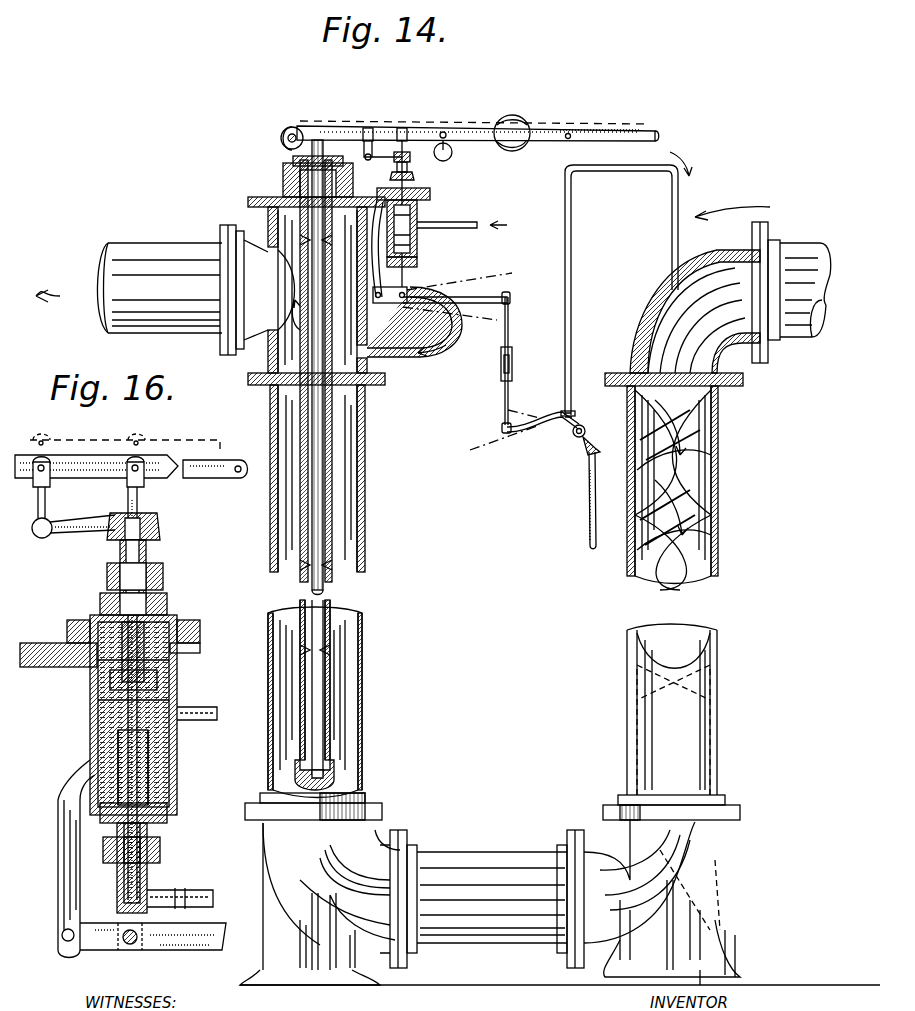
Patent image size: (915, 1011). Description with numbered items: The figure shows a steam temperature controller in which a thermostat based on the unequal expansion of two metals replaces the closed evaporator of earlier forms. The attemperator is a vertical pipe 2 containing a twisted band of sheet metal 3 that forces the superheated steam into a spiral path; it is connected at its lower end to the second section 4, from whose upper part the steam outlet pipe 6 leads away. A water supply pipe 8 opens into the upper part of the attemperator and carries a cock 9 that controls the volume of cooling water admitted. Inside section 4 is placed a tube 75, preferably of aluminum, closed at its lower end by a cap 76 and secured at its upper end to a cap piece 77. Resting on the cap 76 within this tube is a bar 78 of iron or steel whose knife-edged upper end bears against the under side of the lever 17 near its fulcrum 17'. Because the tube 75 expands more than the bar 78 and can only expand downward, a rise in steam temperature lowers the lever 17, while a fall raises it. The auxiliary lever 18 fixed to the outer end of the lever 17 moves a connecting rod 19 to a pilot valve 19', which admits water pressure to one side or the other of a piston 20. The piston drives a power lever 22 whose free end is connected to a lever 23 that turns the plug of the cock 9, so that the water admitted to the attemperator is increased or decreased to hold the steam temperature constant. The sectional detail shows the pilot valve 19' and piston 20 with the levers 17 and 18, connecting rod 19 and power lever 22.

In FIG. 14, the pipe 2 is at (715, 508).
In FIG. 14, the twisted band of sheet metal 3 is at (690, 640).
In FIG. 14, the second section 4 is at (362, 675).
In FIG. 14, the steam outlet pipe 6 is at (132, 258).
In FIG. 14, the water supply pipe 8 is at (572, 248).
In FIG. 14, the cock 9 is at (574, 440).
In FIG. 14, the lever 17 is at (478, 126).
In FIG. 16, the lever 17 is at (117, 444).
In FIG. 14, the fulcrum 17' is at (272, 135).
In FIG. 14, the auxiliary lever 18 is at (568, 138).
In FIG. 16, the auxiliary lever 18 is at (224, 480).
In FIG. 16, the connecting rod 19 is at (154, 693).
In FIG. 16, the pilot valve 19' is at (124, 664).
In FIG. 16, the piston 20 is at (175, 753).
In FIG. 14, the power lever 22 is at (508, 296).
In FIG. 16, the power lever 22 is at (205, 935).
In FIG. 14, the lever 23 is at (530, 432).
In FIG. 14, the tube 75 is at (330, 522).
In FIG. 14, the cap 76 is at (336, 772).
In FIG. 14, the cap piece 77 is at (285, 178).
In FIG. 14, the tube or bar 78 is at (314, 472).